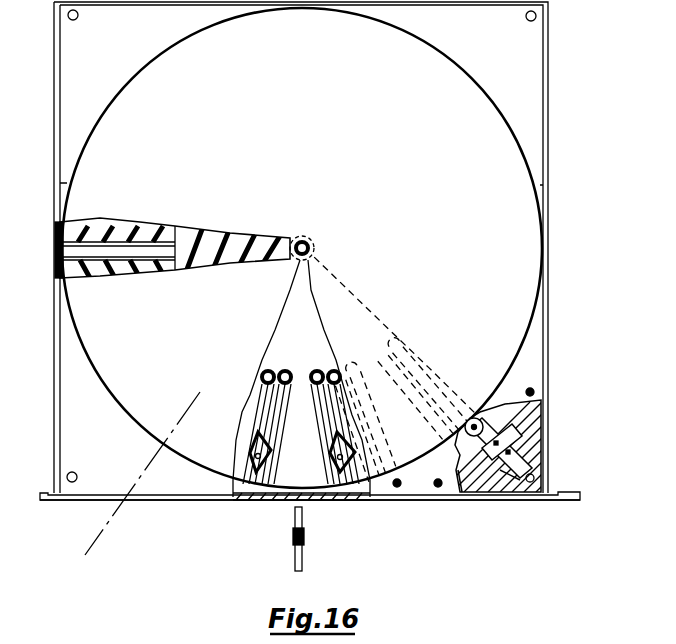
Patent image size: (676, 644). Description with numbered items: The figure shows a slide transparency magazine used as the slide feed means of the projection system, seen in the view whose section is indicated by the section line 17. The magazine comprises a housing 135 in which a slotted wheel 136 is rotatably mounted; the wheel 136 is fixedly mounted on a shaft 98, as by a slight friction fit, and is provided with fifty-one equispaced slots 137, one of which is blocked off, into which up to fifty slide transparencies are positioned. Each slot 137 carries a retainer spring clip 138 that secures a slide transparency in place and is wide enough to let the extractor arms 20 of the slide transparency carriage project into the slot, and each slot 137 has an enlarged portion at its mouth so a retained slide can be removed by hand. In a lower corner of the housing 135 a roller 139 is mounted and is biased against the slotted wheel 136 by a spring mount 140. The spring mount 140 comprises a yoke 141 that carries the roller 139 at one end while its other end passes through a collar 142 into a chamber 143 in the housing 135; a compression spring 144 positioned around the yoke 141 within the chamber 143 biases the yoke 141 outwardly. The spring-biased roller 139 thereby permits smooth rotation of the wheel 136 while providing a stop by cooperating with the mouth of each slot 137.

The section line 17 is at (186, 402).
The extractor arms 20 is at (303, 555).
The shaft 98 is at (308, 244).
The housing 135 is at (540, 108).
The slotted wheel 136 is at (526, 203).
The slots 137 is at (362, 356).
The retainer spring clip 138 is at (330, 453).
The roller 139 is at (476, 418).
The spring mount 140 is at (537, 440).
The yoke 141 is at (471, 435).
The collar 142 is at (518, 422).
The chamber 143 is at (518, 463).
The compression spring 144 is at (513, 445).